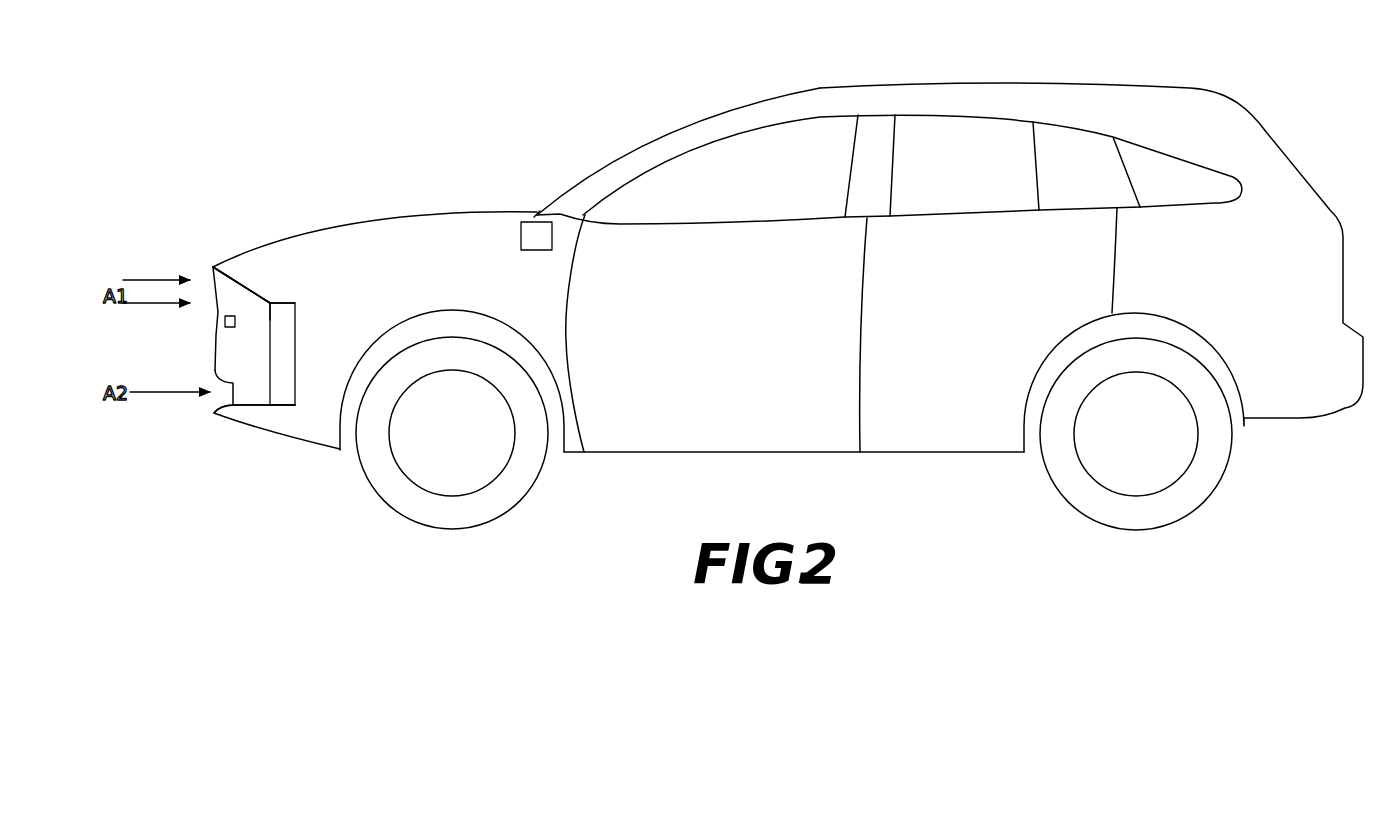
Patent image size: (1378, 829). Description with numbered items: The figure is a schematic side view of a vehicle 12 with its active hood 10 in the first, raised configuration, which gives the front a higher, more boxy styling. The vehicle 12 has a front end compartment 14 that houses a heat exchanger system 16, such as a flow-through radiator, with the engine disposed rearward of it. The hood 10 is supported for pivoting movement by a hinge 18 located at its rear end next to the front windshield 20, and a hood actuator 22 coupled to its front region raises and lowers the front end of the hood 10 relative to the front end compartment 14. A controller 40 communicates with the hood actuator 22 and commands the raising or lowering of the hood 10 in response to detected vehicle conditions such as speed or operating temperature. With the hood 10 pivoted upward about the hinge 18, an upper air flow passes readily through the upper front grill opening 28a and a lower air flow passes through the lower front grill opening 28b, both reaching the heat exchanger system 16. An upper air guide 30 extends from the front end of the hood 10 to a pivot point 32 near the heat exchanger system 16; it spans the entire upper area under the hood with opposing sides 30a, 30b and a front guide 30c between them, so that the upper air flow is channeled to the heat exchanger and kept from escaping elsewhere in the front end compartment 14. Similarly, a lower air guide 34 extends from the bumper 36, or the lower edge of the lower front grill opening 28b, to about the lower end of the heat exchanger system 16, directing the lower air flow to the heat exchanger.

The active hood 10 is at (331, 221).
The vehicle 12 is at (940, 80).
The front end compartment 14 is at (354, 304).
The heat exchanger system 16 is at (293, 366).
The hinge 18 is at (540, 212).
The front windshield 20 is at (660, 135).
The hood actuator 22 is at (225, 322).
The upper front grill opening 28a is at (214, 280).
The lower front grill opening 28b is at (230, 384).
The upper air guide 30 is at (262, 296).
The opposing side of upper air guide 30a is at (238, 281).
The opposing side of upper air guide 30b is at (230, 262).
The front guide 30c is at (269, 304).
The pivot point 32 is at (272, 302).
The lower air guide 34 is at (253, 406).
The bumper 36 is at (214, 414).
The controller 40 is at (547, 247).